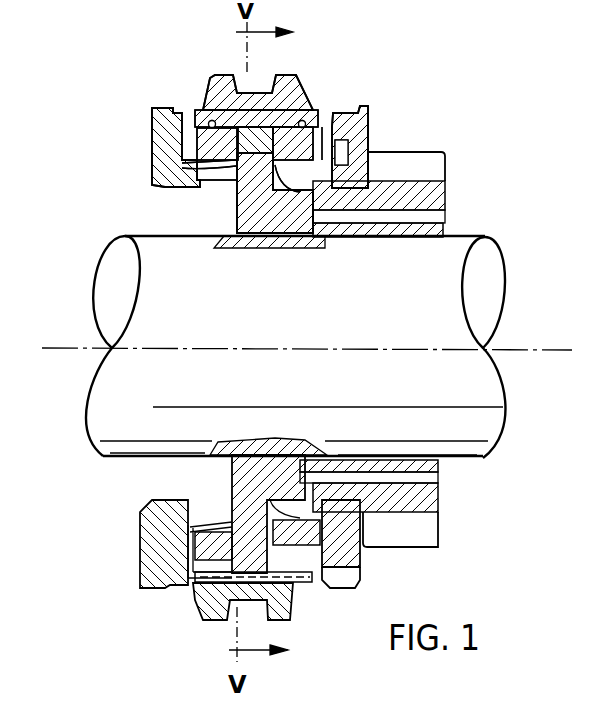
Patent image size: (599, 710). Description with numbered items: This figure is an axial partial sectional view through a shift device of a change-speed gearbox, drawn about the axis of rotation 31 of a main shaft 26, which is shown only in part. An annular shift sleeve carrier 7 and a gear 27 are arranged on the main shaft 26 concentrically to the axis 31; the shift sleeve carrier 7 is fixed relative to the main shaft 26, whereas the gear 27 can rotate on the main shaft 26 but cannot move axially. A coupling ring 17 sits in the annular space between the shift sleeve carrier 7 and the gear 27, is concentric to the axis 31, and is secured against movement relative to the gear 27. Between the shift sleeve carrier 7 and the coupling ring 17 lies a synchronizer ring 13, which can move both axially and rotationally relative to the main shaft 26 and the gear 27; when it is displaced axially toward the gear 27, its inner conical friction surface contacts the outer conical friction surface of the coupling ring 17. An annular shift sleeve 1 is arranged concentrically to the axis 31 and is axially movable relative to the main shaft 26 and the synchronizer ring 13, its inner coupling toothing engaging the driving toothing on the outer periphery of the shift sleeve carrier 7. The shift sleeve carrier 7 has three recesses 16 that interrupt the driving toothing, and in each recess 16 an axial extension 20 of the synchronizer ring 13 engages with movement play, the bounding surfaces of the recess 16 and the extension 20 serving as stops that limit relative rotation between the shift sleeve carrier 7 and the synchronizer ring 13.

The shift sleeve 1 is at (308, 80).
The shift sleeve carrier 7 is at (225, 207).
The synchronizer ring 13 is at (325, 122).
The recess 16 is at (257, 140).
The coupling ring 17 is at (378, 137).
The axial extension 20 is at (277, 118).
The main shaft 26 is at (510, 242).
The gear 27 is at (458, 188).
The axis of rotation 31 is at (56, 350).